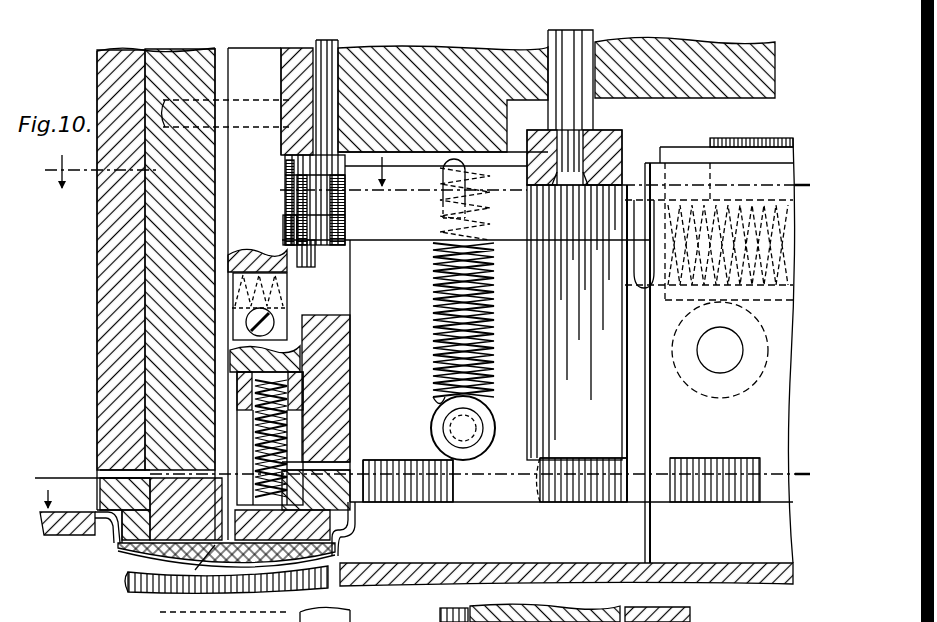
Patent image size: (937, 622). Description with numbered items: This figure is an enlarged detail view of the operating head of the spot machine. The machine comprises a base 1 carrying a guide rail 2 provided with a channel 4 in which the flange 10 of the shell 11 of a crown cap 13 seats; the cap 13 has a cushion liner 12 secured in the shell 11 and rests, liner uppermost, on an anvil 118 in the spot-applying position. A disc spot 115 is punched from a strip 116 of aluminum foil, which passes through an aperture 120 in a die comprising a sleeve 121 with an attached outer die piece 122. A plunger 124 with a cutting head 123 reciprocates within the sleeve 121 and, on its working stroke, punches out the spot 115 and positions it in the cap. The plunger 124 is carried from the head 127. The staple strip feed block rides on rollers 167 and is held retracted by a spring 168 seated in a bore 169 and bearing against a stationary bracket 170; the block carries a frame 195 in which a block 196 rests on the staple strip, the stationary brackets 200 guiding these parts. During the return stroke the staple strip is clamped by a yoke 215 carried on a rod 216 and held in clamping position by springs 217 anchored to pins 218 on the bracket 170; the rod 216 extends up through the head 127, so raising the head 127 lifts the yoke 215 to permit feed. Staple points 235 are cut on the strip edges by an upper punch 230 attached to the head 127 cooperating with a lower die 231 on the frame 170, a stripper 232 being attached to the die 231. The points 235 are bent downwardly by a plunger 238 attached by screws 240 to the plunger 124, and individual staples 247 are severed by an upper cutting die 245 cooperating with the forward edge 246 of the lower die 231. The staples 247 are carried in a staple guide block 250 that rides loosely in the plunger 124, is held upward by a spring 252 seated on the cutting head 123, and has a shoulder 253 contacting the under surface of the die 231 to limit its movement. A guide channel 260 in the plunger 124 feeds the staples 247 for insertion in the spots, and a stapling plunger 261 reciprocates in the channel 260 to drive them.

The base 1 is at (727, 572).
The guide rail 2 is at (39, 497).
The channel 4 is at (95, 522).
The flange 10 is at (108, 522).
The shell 11 is at (135, 573).
The cushion liner 12 is at (133, 550).
The crown cap 13 is at (348, 556).
The disc spot 115 is at (205, 560).
The strip 116 is at (518, 535).
The anvil 118 is at (128, 584).
The aperture 120 is at (113, 468).
The sleeve 121 is at (112, 356).
The outer die piece 122 is at (362, 504).
The cutting head 123 is at (343, 534).
The plunger 124 is at (170, 317).
The head 127 is at (412, 30).
The roller 167 is at (710, 395).
The spring 168 is at (662, 272).
The bore 169 is at (748, 205).
The bracket 170 is at (633, 440).
The frame 195 is at (688, 156).
The block 196 is at (760, 145).
The bracket 200 is at (662, 380).
The yoke 215 is at (622, 148).
The rod 216 is at (582, 116).
The spring 217 is at (432, 333).
The pin 218 is at (468, 440).
The upper punch 230 is at (328, 46).
The lower die 231 is at (325, 252).
The stripper 232 is at (318, 190).
The point 235 is at (290, 213).
The plunger 238 is at (293, 143).
The screw 240 is at (226, 100).
The upper cutting die 245 is at (248, 48).
The forward edge 246 is at (278, 220).
The staple 247 is at (290, 188).
The staple guide block 250 is at (303, 398).
The spring 252 is at (282, 437).
The shoulder 253 is at (335, 308).
The guide channel 260 is at (213, 389).
The stapling plunger 261 is at (220, 182).